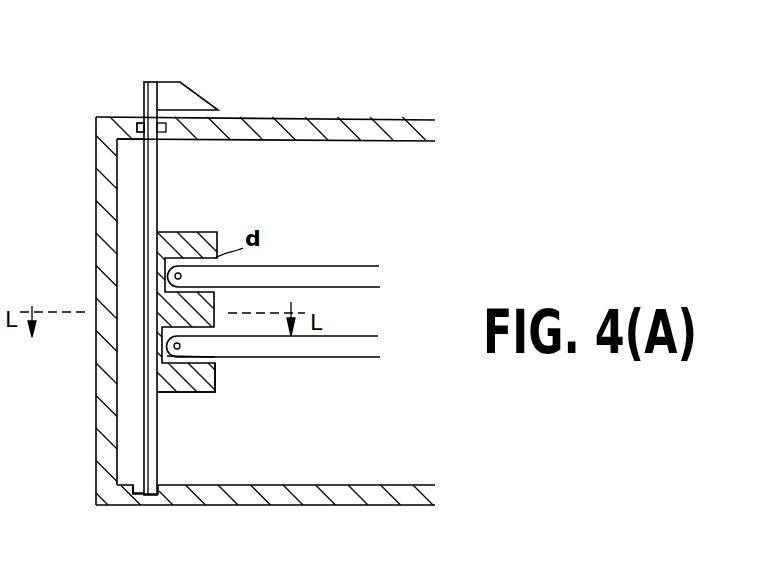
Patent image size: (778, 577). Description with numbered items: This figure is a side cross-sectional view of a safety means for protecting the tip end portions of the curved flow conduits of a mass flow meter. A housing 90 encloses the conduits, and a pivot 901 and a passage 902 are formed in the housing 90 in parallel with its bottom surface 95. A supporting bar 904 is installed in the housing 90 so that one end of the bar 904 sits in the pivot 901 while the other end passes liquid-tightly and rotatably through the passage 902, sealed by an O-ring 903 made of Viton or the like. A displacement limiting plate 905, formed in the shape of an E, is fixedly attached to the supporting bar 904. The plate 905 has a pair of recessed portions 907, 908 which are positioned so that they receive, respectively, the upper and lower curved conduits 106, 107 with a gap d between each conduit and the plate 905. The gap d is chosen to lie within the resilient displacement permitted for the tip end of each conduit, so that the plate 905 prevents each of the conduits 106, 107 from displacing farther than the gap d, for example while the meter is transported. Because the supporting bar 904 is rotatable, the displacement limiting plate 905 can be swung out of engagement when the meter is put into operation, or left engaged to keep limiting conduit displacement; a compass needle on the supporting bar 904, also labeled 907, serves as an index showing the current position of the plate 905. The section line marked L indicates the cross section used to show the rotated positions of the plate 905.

The housing 90 is at (338, 118).
The bottom surface 95 is at (125, 222).
The upper curved conduit 106 is at (334, 266).
The lower curved conduit 107 is at (370, 338).
The pivot 901 is at (157, 490).
The passage 902 is at (160, 140).
The O-ring 903 is at (141, 121).
The supporting bar 904 is at (157, 197).
The displacement limiting plate 905 is at (217, 388).
The recessed portion 907 is at (183, 92).
The recessed portion 908 is at (212, 291).